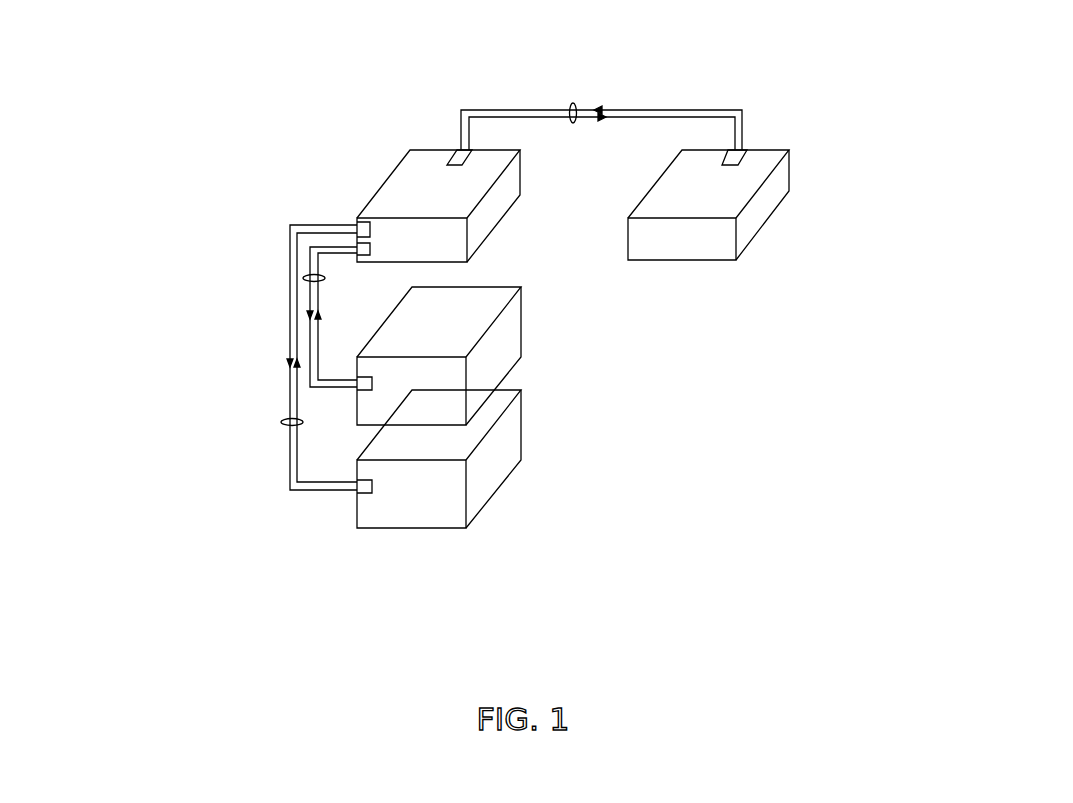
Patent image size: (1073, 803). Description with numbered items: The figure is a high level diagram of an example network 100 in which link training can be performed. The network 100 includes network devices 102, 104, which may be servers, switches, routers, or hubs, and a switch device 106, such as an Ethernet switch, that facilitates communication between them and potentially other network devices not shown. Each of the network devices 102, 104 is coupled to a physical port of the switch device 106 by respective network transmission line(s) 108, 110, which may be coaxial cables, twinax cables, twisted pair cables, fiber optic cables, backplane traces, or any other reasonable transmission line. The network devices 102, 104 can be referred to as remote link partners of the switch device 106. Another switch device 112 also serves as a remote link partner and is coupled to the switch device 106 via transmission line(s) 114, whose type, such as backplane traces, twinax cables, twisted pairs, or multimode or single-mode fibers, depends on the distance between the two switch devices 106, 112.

The network 100 is at (881, 655).
The network device 102 is at (522, 318).
The network device 104 is at (522, 420).
The switch device 106 is at (385, 182).
The network transmission line(s) 108 is at (303, 278).
The network transmission line(s) 110 is at (282, 422).
The switch device 112 is at (790, 178).
The transmission line(s) 114 is at (573, 102).